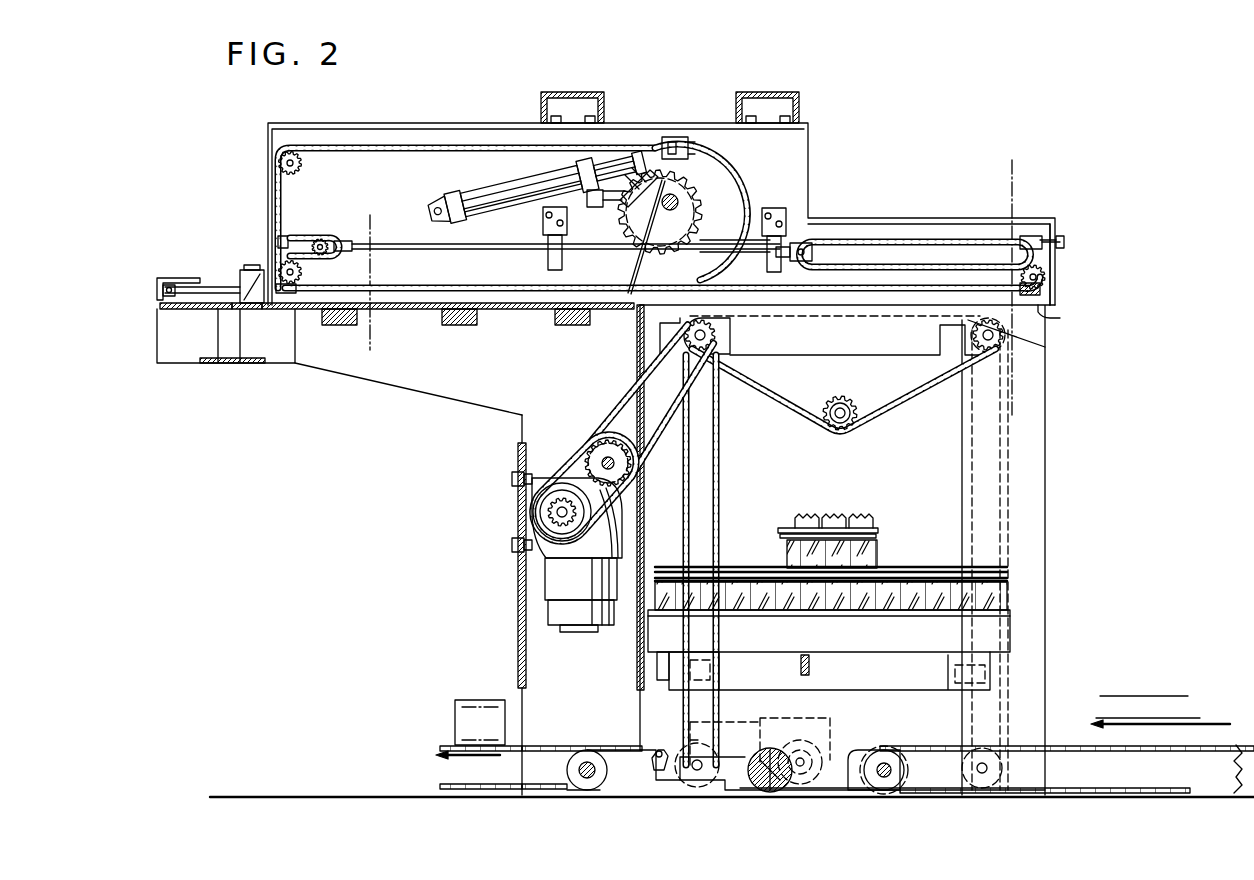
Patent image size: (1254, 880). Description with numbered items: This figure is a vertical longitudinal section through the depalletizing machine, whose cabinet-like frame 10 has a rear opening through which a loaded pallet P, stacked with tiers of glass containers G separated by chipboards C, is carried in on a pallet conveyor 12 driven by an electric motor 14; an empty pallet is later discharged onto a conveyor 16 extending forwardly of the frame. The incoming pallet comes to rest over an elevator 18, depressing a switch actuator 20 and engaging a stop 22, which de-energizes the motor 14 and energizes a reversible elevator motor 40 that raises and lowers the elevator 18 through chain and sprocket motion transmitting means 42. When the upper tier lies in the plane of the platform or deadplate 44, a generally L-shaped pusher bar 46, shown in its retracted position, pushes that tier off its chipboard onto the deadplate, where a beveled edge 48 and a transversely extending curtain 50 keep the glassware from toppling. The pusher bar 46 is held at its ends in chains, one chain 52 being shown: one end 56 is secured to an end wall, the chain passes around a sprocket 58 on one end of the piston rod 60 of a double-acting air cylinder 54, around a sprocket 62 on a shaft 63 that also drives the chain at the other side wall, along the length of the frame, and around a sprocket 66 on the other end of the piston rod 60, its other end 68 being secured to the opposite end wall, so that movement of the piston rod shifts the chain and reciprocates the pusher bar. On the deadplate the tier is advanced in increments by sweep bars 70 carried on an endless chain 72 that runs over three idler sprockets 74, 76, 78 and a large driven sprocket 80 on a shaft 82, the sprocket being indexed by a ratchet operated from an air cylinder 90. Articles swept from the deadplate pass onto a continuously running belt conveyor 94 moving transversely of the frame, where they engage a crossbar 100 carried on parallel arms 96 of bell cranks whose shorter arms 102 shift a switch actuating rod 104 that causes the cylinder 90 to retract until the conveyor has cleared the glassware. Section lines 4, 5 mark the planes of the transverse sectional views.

The cabinet-like frame 10 is at (518, 622).
The pallet conveyor 12 is at (1062, 748).
The electric motor 14 is at (815, 735).
The conveyor 16 is at (445, 747).
The elevator 18 is at (916, 676).
The switch actuator 20 is at (658, 742).
The stop 22 is at (650, 748).
The reversible elevator motor 40 is at (547, 578).
The chain and sprocket motion transmitting means 42 is at (787, 408).
The deadplate 44 is at (525, 310).
The pusher bar 46 is at (1062, 318).
The beveled edge 48 is at (636, 316).
The curtain 50 is at (676, 220).
The chain 52 is at (893, 286).
The double-acting air cylinder 54 is at (742, 242).
The end of chain 56 is at (1033, 243).
The sprocket 58 is at (848, 238).
The piston rod 60 is at (806, 248).
The sprocket 62 is at (1046, 282).
The shaft 63 is at (1043, 273).
The sprocket 66 is at (314, 246).
The other end of chain 68 is at (292, 236).
The sweep bar 70 is at (285, 306).
The chain 72 is at (440, 148).
The idler sprocket 74 is at (697, 296).
The idler sprocket 76 is at (272, 265).
The idler sprocket 78 is at (280, 168).
The driven sprocket 80 is at (700, 195).
The shaft 82 is at (678, 202).
The air cylinder 90 is at (470, 190).
The motor driven conveyor 94 is at (242, 309).
The parallel arms 96 is at (205, 313).
The crossbar 100 is at (245, 283).
The shorter arms 102 is at (168, 291).
The switch actuating rod 104 is at (165, 300).
The glass containers G is at (245, 276).
The chipboards C is at (905, 575).
The pallet P is at (470, 700).
The section line 4- 4 is at (1005, 390).
The section line 5- 5 is at (382, 323).